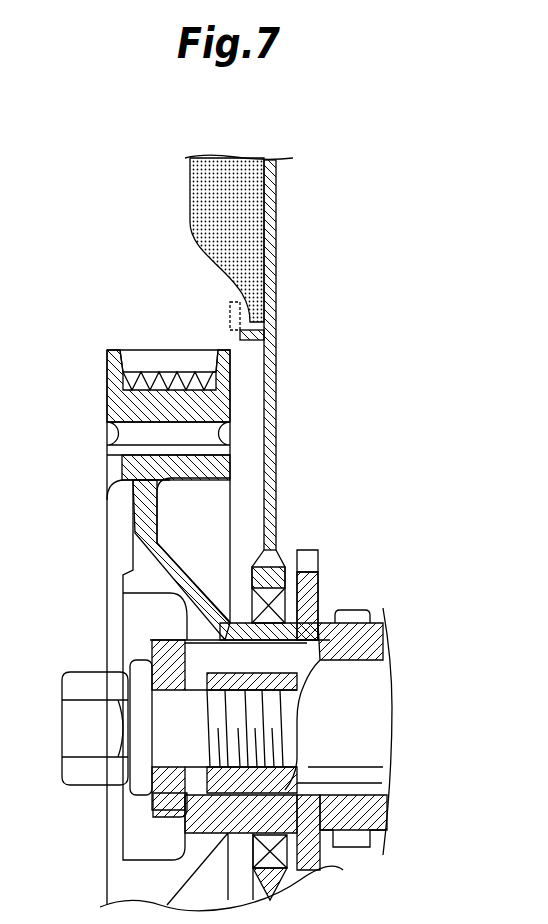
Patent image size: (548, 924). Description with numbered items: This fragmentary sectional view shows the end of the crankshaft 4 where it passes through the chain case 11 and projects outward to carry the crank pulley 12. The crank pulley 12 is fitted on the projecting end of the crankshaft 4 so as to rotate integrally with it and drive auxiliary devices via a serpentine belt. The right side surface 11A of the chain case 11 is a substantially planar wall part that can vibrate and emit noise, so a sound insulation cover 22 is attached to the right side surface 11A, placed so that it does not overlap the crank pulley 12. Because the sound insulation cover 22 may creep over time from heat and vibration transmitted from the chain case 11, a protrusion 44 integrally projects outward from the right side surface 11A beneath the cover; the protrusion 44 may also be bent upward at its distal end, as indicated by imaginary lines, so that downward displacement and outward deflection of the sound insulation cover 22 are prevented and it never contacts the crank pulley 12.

The crankshaft 4 is at (373, 710).
The chain case 11 is at (277, 423).
The right side surface 11A is at (250, 343).
The crank pulley 12 is at (120, 397).
The sound insulation cover 22 is at (203, 188).
The protrusion 44 is at (230, 318).